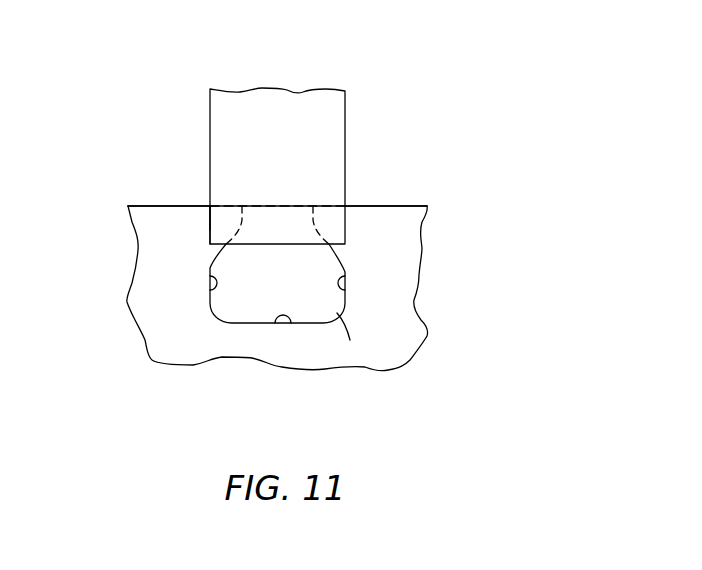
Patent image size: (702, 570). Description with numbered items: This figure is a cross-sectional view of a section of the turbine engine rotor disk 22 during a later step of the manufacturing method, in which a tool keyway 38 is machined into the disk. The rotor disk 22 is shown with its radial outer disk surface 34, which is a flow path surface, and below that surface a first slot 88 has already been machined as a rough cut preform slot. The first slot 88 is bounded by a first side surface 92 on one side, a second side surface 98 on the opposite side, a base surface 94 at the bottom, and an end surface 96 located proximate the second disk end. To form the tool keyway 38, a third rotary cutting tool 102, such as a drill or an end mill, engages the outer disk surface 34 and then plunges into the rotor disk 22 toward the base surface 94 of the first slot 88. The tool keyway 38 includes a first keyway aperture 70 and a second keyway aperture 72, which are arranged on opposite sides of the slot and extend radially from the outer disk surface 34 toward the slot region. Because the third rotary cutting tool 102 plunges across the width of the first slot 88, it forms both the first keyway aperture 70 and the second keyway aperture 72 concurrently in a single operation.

The turbine engine rotor disk 22 is at (455, 240).
The radial outer disk surface 34 is at (400, 206).
The tool keyway 38 is at (210, 222).
The first keyway aperture 70 is at (210, 240).
The second keyway aperture 72 is at (345, 228).
The first slot 88 is at (212, 305).
The first side surface 92 is at (210, 277).
The base surface 94 is at (292, 323).
The end surface 96 is at (347, 333).
The second side surface 98 is at (345, 276).
The third rotary cutting tool 102 is at (287, 100).